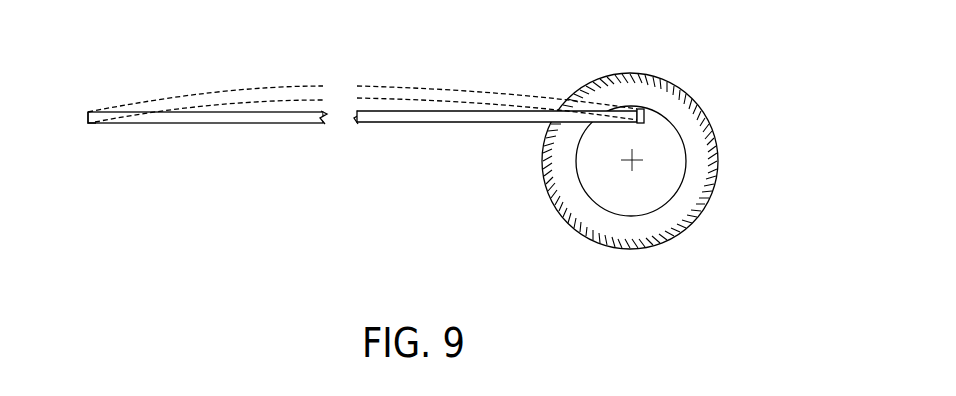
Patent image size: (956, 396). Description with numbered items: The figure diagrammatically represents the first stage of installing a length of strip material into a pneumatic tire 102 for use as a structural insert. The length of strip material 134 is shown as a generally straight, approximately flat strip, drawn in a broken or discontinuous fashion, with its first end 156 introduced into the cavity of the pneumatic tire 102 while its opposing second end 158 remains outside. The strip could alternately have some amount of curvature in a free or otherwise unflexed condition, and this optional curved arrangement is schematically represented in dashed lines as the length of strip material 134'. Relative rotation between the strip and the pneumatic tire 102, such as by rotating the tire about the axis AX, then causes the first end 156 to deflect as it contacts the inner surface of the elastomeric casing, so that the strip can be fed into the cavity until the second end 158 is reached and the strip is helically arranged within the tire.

The pneumatic tire 102 is at (724, 149).
The length of strip material 134 is at (362, 147).
The length of strip material 134' is at (362, 65).
The first end 156 is at (641, 110).
The second end 158 is at (98, 121).
The axis AX is at (631, 166).